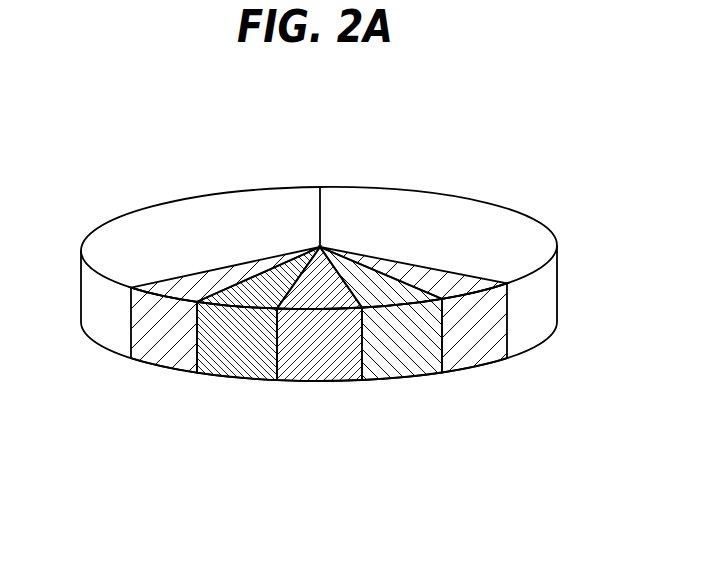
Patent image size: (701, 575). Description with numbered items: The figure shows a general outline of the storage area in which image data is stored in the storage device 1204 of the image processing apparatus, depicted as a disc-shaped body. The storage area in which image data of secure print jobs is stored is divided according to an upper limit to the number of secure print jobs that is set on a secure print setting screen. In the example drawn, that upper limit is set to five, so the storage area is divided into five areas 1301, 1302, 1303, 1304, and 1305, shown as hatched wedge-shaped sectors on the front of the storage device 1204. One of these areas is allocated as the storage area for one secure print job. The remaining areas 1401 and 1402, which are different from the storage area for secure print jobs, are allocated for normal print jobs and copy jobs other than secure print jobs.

The storage device 1204 is at (428, 160).
The area for normal print jobs and copy jobs 1401 is at (150, 217).
The area for normal print jobs and copy jobs 1402 is at (503, 218).
The secure print storage area 1301 is at (162, 365).
The secure print storage area 1302 is at (240, 370).
The secure print storage area 1303 is at (322, 372).
The secure print storage area 1304 is at (408, 370).
The secure print storage area 1305 is at (490, 362).